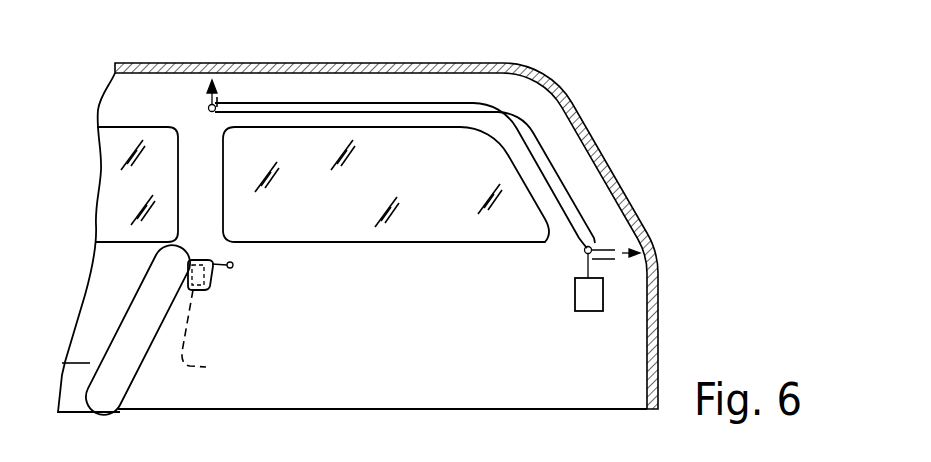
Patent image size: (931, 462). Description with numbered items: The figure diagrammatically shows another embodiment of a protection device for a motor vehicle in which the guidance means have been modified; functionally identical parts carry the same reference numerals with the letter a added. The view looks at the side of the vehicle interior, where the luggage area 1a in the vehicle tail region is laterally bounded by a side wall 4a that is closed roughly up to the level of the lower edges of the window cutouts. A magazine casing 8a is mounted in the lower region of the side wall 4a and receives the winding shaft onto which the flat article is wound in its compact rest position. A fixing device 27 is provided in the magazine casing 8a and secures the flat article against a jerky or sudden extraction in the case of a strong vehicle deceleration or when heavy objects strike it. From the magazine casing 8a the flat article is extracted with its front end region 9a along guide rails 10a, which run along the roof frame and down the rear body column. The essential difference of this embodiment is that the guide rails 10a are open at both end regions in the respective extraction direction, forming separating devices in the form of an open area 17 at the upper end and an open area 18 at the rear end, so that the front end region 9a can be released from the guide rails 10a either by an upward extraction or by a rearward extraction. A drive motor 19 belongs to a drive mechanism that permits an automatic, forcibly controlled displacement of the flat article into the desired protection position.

The luggage area 1a is at (348, 366).
The side wall 4a is at (380, 302).
The magazine casing 8a is at (209, 281).
The front end region 9a is at (210, 118).
The guide rails 10a is at (535, 147).
The open area 17 is at (228, 90).
The open area 18 is at (607, 232).
The drive motor 19 is at (575, 295).
The fixing device 27 is at (214, 337).